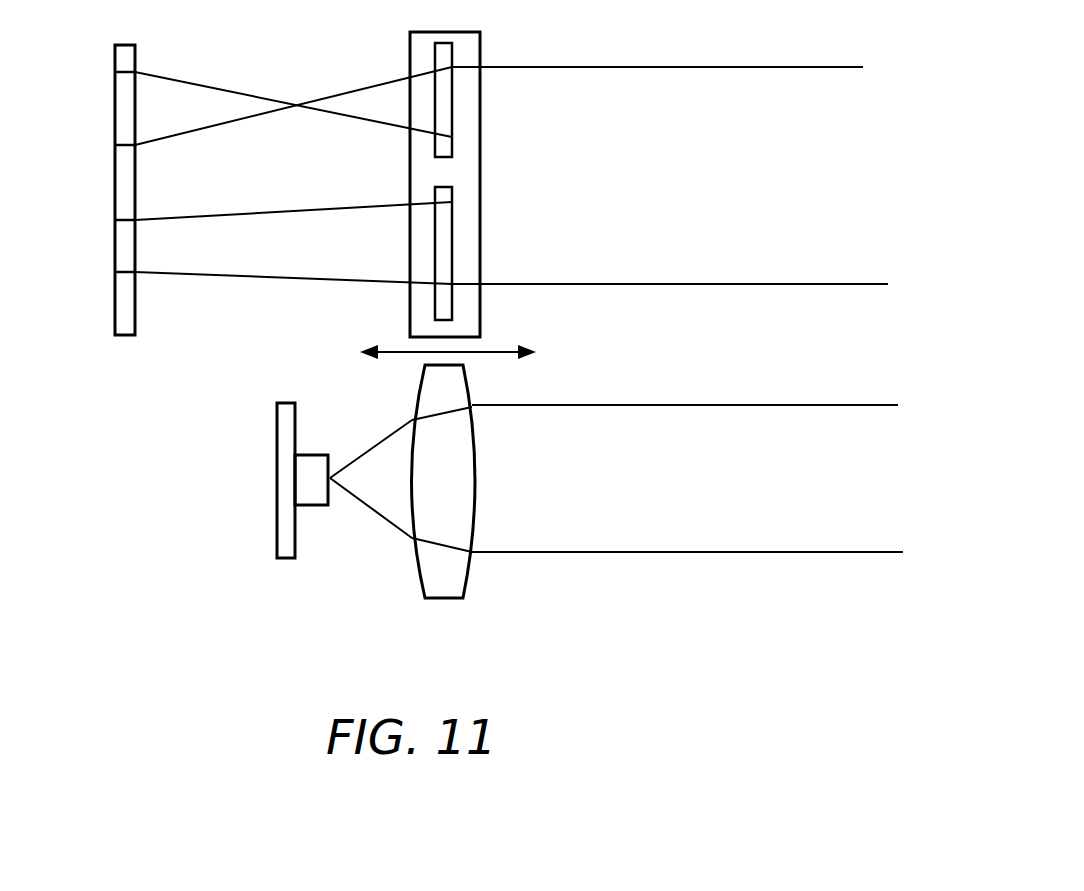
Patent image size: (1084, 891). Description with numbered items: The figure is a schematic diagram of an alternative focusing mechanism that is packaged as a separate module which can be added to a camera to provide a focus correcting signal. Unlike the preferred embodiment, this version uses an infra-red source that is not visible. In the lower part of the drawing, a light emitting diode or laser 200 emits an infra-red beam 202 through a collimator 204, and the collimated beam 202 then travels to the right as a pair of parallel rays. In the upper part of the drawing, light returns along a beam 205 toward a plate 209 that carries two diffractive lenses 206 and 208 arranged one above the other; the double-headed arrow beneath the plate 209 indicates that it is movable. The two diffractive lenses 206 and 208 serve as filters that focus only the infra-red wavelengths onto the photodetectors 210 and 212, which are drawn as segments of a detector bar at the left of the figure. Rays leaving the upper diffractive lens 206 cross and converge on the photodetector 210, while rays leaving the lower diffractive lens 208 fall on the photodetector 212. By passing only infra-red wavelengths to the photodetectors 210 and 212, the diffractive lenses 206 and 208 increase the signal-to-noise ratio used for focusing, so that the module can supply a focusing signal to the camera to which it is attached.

The laser 200 is at (310, 493).
The infra-red beam 202 is at (743, 554).
The collimator 204 is at (448, 590).
The beam 205 is at (780, 66).
The diffractive lens 206 is at (443, 120).
The diffractive lens 208 is at (445, 240).
The slit plate 209 is at (412, 53).
The photodetector 210 is at (120, 118).
The photodetector 212 is at (123, 252).